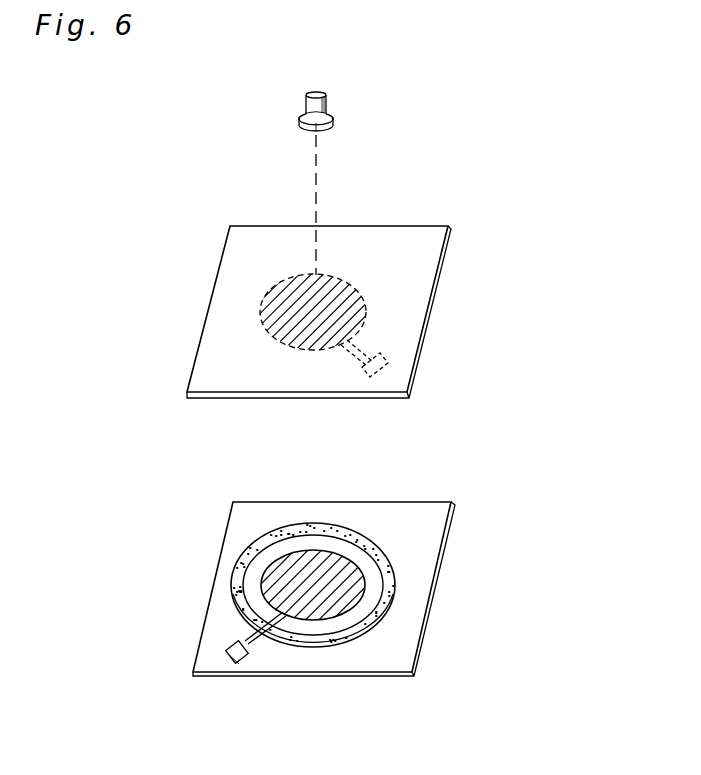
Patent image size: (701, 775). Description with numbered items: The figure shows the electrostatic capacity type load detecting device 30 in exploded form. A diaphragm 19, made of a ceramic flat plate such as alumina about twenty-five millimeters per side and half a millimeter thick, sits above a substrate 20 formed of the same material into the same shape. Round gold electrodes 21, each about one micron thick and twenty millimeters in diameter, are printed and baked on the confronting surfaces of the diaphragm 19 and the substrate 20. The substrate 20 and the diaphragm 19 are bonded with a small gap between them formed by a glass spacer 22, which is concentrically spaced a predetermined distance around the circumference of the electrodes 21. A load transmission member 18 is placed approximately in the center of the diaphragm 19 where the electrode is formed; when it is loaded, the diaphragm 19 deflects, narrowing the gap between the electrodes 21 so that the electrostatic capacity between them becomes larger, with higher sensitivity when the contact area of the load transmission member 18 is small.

The load transmission member 18 is at (306, 103).
The diaphragm 19 is at (407, 295).
The substrate 20 is at (415, 550).
The gold electrodes 21 is at (267, 300).
The glass spacer 22 is at (365, 635).
The electrostatic capacity type load detecting device 30 is at (577, 692).